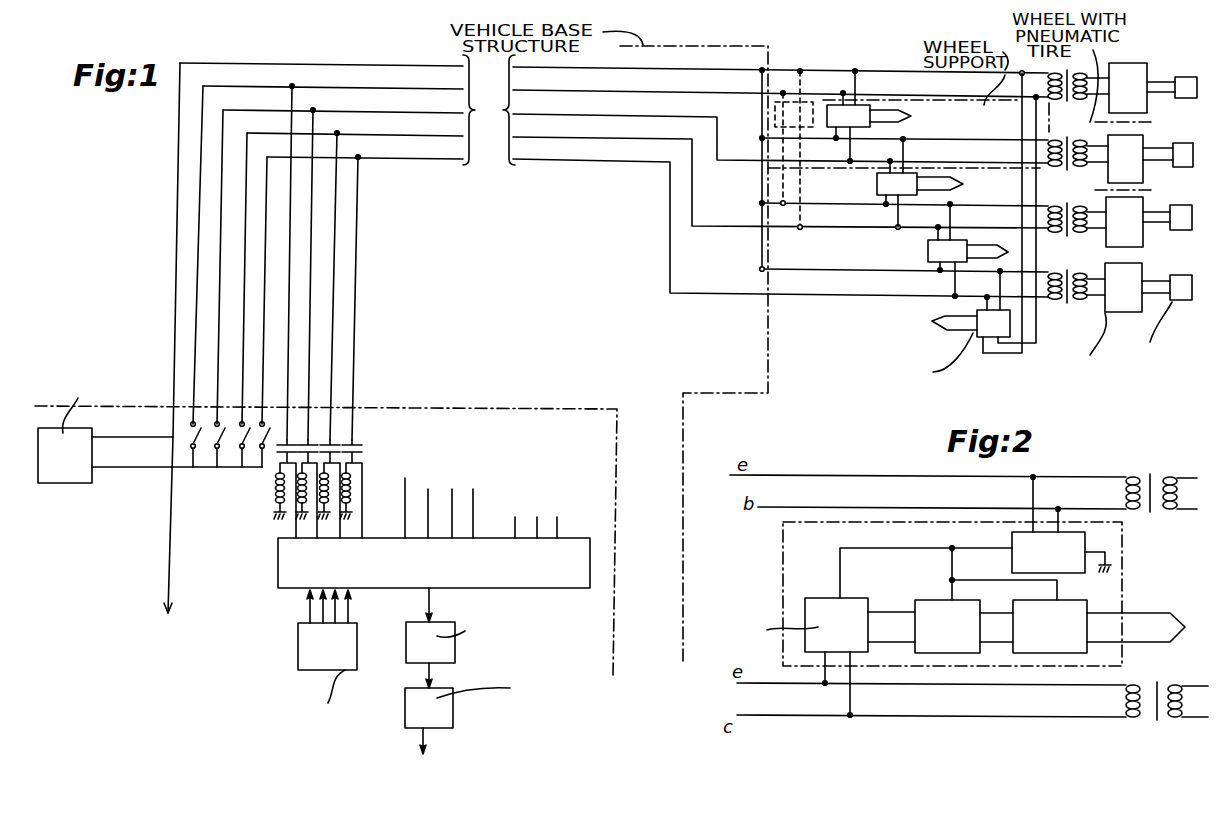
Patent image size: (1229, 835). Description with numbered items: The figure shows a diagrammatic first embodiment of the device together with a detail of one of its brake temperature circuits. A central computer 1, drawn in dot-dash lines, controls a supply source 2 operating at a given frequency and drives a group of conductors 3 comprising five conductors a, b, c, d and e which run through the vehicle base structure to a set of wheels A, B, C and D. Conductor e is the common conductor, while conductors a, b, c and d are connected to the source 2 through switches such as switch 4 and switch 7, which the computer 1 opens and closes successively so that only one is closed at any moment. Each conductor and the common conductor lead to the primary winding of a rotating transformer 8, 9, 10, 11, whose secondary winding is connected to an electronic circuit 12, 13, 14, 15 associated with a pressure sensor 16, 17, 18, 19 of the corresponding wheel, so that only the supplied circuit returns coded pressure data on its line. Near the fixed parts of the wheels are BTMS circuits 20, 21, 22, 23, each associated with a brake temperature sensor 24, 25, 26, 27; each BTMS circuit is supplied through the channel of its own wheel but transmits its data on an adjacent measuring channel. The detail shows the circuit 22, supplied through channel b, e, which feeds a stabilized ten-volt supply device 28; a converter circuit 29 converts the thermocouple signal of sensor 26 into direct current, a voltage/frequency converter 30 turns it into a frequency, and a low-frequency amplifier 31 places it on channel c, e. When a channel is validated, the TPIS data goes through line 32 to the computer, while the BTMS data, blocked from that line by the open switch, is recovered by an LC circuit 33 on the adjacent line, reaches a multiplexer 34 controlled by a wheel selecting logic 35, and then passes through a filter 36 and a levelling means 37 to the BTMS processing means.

In FIG. 1, the central computer 1 is at (542, 410).
In FIG. 1, the supply source 2 is at (67, 470).
In FIG. 1, the group of conductors 3 is at (603, 247).
In FIG. 1, the switch 4 is at (197, 444).
In FIG. 1, the switch 7 is at (255, 444).
In FIG. 1, the rotating transformer 8 is at (1076, 298).
In FIG. 1, the rotating transformer 9 is at (1077, 227).
In FIG. 1, the rotating transformer 10 is at (1056, 172).
In FIG. 1, the rotating transformer 11 is at (1078, 97).
In FIG. 1, the electronic circuit 12 is at (1142, 272).
In FIG. 1, the electronic circuit 13 is at (1143, 205).
In FIG. 1, the electronic circuit 14 is at (1143, 140).
In FIG. 1, the electronic circuit 15 is at (1143, 70).
In FIG. 1, the pressure sensor 16 is at (1184, 301).
In FIG. 1, the pressure sensor 17 is at (1176, 190).
In FIG. 1, the pressure sensor 18 is at (1186, 144).
In FIG. 1, the pressure sensor 19 is at (1189, 79).
In FIG. 1, the BTMS circuit 20 is at (987, 333).
In FIG. 1, the BTMS circuit 21 is at (928, 252).
In FIG. 1, the BTMS circuit 22 is at (877, 185).
In FIG. 2, the BTMS circuit 22 is at (1125, 573).
In FIG. 1, the BTMS circuit 23 is at (858, 107).
In FIG. 1, the brake temperature sensor 24 is at (935, 327).
In FIG. 1, the brake temperature sensor 25 is at (1008, 252).
In FIG. 1, the brake temperature sensor 26 is at (963, 184).
In FIG. 2, the brake temperature sensor 26 is at (1185, 627).
In FIG. 1, the brake temperature sensor 27 is at (911, 116).
In FIG. 2, the stabilized 10 V supply device 28 is at (1012, 562).
In FIG. 2, the converter circuit 29 is at (1087, 611).
In FIG. 2, the voltage/frequency converter 30 is at (935, 607).
In FIG. 2, the low-frequency amplifier 31 is at (822, 602).
In FIG. 1, the line 32 is at (168, 548).
In FIG. 1, the LC circuit 33 is at (307, 489).
In FIG. 1, the multiplexer 34 is at (518, 580).
In FIG. 1, the wheel selecting logic 35 is at (316, 670).
In FIG. 1, the filter 36 is at (455, 652).
In FIG. 1, the levelling means 37 is at (453, 712).